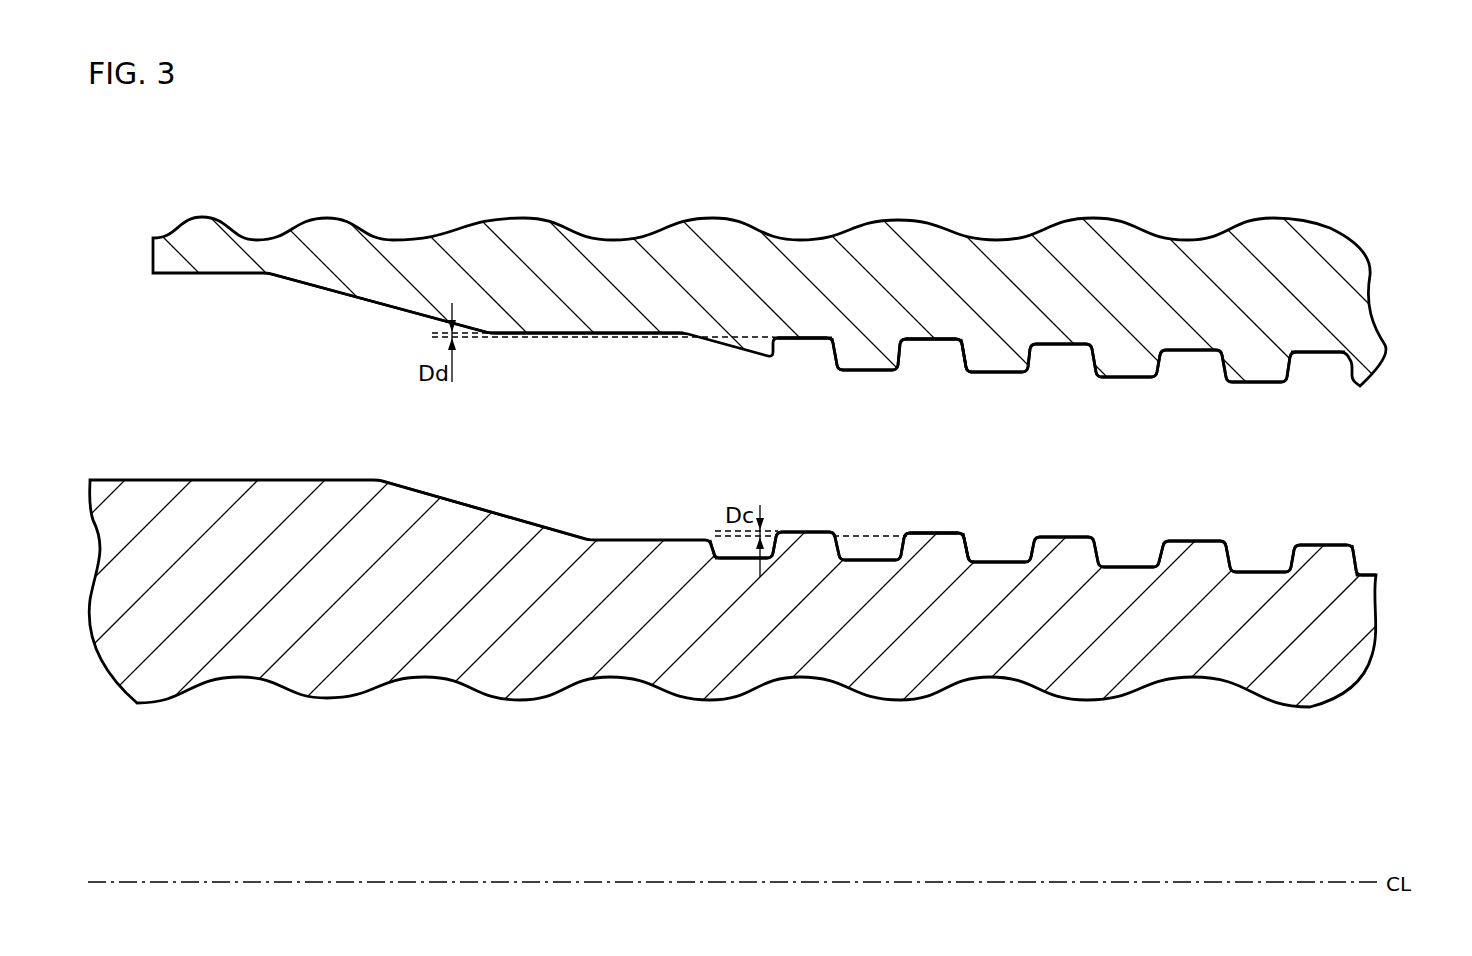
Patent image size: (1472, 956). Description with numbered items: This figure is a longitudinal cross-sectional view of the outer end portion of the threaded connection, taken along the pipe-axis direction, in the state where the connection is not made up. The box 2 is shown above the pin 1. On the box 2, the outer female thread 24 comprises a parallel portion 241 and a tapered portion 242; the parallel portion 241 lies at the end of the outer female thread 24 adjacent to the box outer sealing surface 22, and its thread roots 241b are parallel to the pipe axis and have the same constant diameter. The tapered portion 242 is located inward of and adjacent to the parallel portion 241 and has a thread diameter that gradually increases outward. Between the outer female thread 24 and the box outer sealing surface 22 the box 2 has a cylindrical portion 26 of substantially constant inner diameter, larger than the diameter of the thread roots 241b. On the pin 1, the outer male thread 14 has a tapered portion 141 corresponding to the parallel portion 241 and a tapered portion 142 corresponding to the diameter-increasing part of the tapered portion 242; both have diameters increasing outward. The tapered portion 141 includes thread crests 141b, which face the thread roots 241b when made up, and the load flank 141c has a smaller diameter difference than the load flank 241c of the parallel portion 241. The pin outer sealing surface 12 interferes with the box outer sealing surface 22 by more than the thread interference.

The pin 1 is at (1386, 642).
The box 2 is at (1386, 287).
The pin outer sealing surface 12 is at (490, 513).
The outer male thread 14 is at (1110, 818).
The box outer sealing surface 22 is at (362, 293).
The outer female thread 24 is at (1143, 163).
The cylindrical portion 26 is at (598, 333).
The tapered portion 141 is at (878, 566).
The thread crests 141b is at (937, 537).
The load flank 141c is at (975, 553).
The tapered portion 142 is at (1130, 573).
The parallel portion 241 is at (868, 328).
The thread roots 241b is at (925, 341).
The load flank 241c is at (962, 350).
The tapered portion 242 is at (1143, 343).